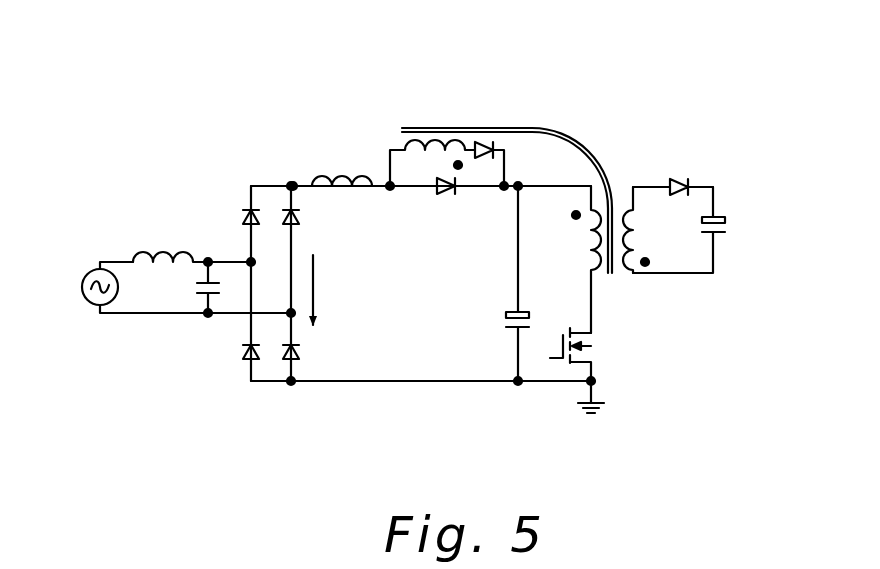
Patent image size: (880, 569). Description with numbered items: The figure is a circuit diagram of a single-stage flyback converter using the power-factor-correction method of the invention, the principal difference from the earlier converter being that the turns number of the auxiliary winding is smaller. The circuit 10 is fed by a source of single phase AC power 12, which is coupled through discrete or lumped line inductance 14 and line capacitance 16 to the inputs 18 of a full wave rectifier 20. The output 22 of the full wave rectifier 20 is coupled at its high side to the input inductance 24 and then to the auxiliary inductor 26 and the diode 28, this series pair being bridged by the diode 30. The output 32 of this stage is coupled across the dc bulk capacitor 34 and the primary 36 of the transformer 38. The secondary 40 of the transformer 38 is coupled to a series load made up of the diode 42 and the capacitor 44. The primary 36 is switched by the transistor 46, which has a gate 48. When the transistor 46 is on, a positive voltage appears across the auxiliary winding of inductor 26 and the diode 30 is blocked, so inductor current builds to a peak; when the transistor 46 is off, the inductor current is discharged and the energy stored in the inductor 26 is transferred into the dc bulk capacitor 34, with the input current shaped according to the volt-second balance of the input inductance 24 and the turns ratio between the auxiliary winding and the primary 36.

The circuit 10 is at (178, 141).
The source of single phase AC power 12 is at (88, 272).
The line inductance 14 is at (160, 250).
The line capacitance 16 is at (193, 287).
The inputs of full wave rectifier 18 is at (291, 316).
The full wave rectifier 20 is at (316, 361).
The output of full wave rectifier 22 is at (291, 184).
The inductance 24 is at (323, 173).
The inductor 26 is at (470, 138).
The diode 28 is at (497, 135).
The diode 30 is at (445, 195).
The output 32 is at (530, 180).
The capacitor 34 is at (497, 322).
The primary 36 is at (590, 253).
The transformer 38 is at (622, 286).
The secondary 40 is at (630, 217).
The diode 42 is at (677, 180).
The capacitor 44 is at (730, 227).
The transistor 46 is at (595, 348).
The gate 48 is at (557, 363).